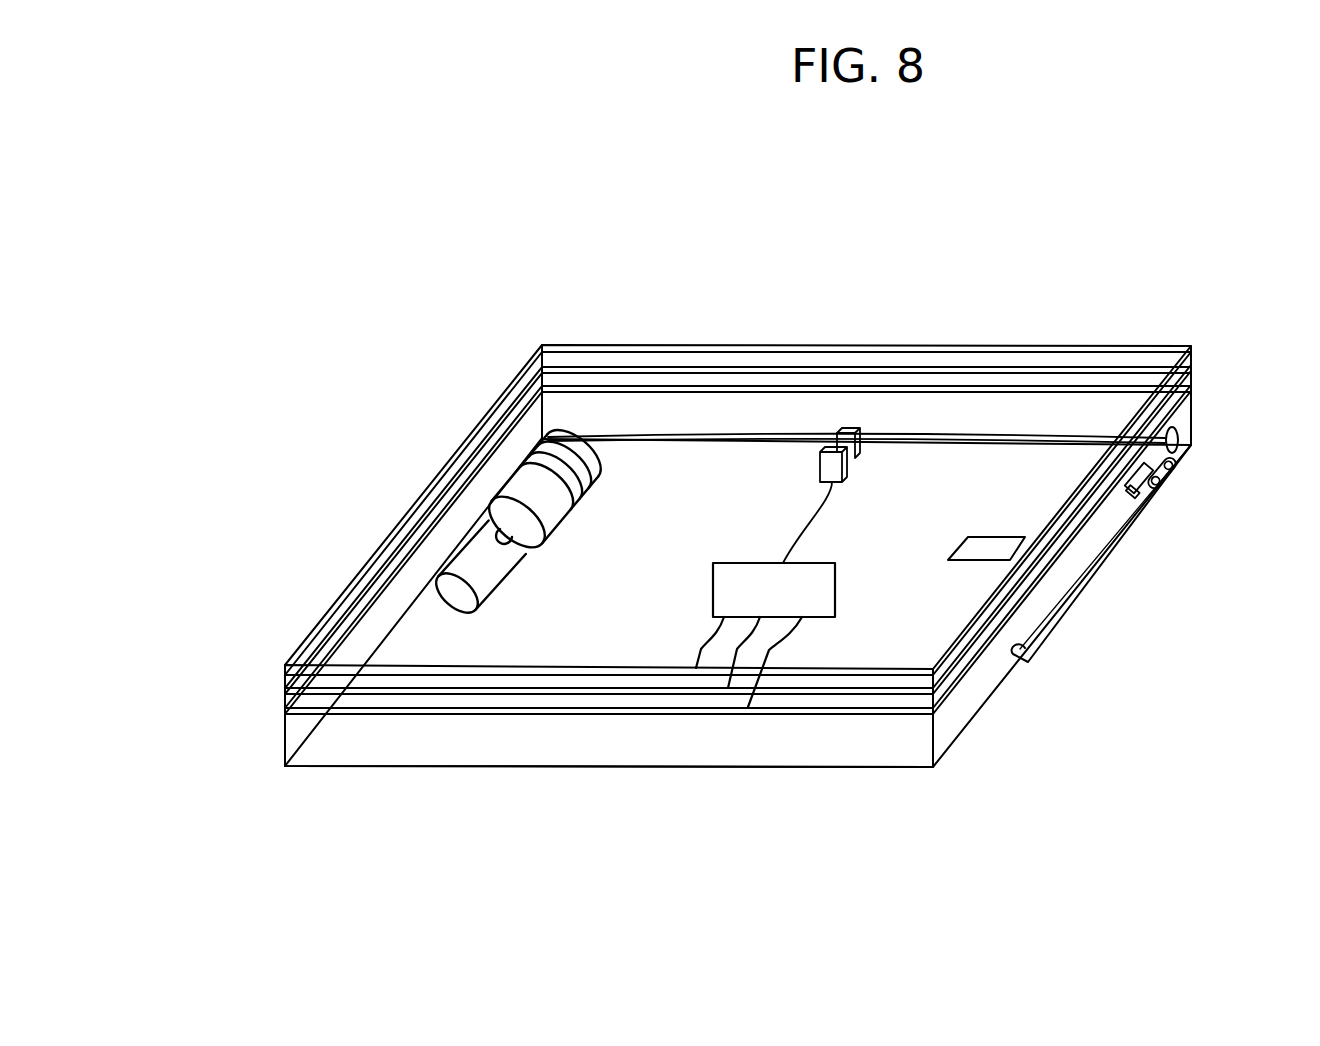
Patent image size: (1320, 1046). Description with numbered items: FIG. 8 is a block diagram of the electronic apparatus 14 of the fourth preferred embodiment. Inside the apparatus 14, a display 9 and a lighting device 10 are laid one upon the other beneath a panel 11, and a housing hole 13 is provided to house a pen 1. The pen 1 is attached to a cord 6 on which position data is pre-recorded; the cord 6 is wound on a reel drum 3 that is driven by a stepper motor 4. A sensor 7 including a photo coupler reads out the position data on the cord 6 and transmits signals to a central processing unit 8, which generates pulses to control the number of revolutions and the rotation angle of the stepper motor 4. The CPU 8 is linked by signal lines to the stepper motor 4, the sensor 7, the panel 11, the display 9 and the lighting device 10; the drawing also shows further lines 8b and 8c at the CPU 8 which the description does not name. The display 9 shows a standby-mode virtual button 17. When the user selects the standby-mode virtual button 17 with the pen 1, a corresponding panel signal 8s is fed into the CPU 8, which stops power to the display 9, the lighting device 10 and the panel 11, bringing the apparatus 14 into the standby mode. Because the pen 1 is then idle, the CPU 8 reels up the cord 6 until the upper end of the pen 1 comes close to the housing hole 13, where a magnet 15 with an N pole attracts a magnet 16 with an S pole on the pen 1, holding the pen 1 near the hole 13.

The pen 1 is at (1097, 563).
The reel drum 3 is at (511, 478).
The stepper motor 4 is at (462, 546).
The cord 6 is at (1008, 437).
The sensor 7 is at (858, 437).
The central processing unit (CPU) 8 is at (723, 563).
The panel signal 8s is at (699, 651).
The bias wire 8b is at (772, 651).
The common wire 8c is at (738, 651).
The display 9 is at (765, 367).
The lighting device 10 is at (858, 386).
The panel 11 is at (692, 347).
The housing hole 13 is at (1178, 430).
The apparatus 14 is at (285, 731).
The magnet 15 is at (1133, 487).
The magnet 16 is at (1163, 487).
The standby-mode virtual button (standby icon) 17 is at (998, 548).